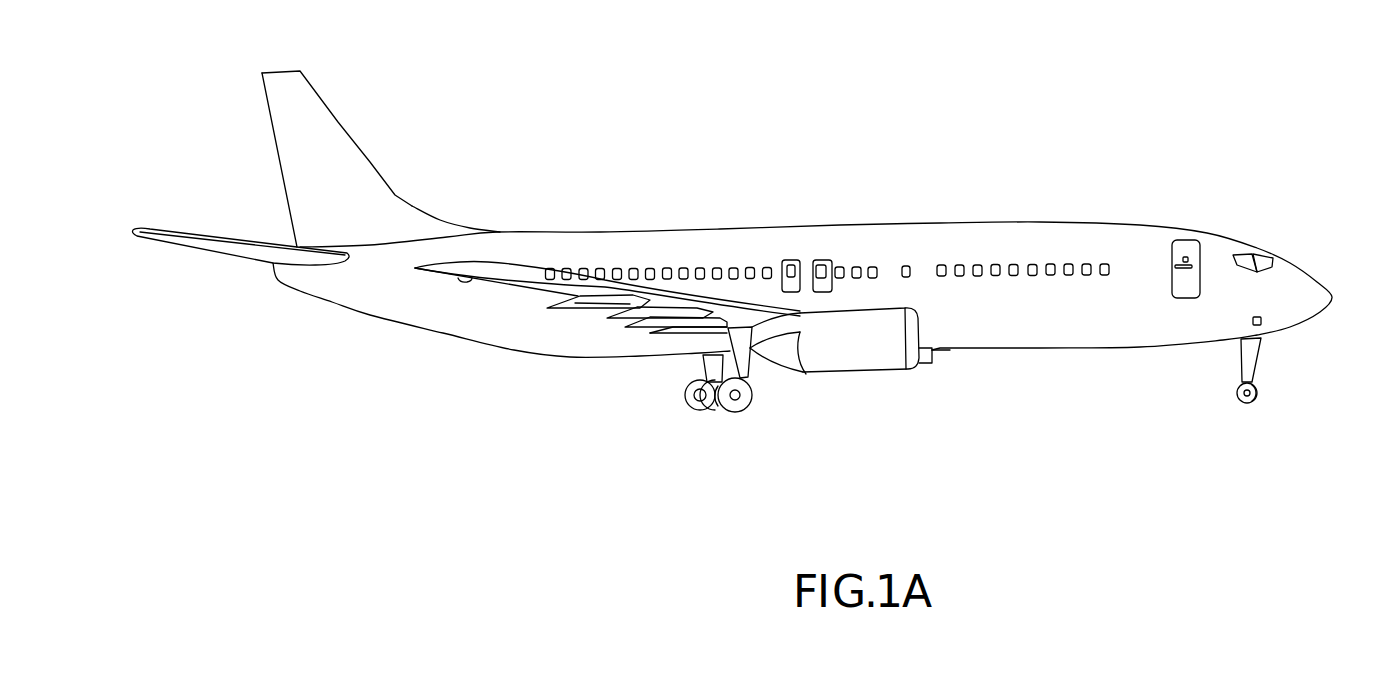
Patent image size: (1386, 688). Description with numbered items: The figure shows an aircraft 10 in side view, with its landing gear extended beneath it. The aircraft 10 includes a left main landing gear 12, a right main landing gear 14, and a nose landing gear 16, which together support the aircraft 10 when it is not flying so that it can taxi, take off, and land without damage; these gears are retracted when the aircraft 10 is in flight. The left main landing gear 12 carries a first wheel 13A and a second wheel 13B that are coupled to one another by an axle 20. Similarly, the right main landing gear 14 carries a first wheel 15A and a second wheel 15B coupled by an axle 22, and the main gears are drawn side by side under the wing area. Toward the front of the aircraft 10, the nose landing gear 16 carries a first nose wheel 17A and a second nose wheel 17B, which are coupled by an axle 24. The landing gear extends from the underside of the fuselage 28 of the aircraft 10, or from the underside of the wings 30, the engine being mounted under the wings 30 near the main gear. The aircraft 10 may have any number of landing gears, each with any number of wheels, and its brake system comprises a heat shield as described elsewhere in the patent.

The aircraft 10 is at (908, 125).
The left main landing gear 12 is at (690, 375).
The first wheel 13A is at (687, 382).
The second wheel 13B is at (697, 413).
The right main landing gear 14 is at (760, 407).
The first wheel 15A is at (752, 393).
The second wheel 15B is at (715, 415).
The nose landing gear 16 is at (1275, 378).
The first nose wheel 17A is at (1233, 397).
The second nose wheel 17B is at (1260, 395).
The axle 20 is at (683, 400).
The axle 22 is at (740, 401).
The axle 24 is at (1250, 400).
The fuselage 28 is at (1235, 342).
The wings 30 is at (783, 318).